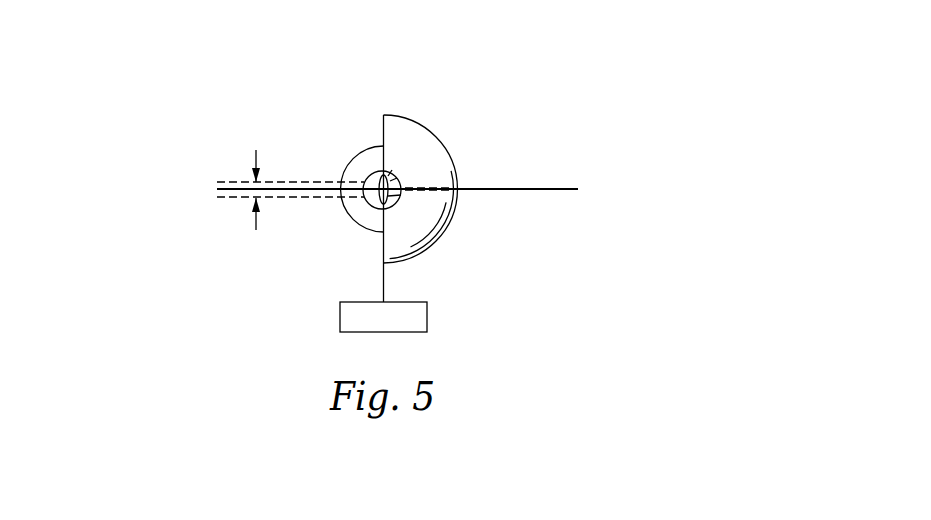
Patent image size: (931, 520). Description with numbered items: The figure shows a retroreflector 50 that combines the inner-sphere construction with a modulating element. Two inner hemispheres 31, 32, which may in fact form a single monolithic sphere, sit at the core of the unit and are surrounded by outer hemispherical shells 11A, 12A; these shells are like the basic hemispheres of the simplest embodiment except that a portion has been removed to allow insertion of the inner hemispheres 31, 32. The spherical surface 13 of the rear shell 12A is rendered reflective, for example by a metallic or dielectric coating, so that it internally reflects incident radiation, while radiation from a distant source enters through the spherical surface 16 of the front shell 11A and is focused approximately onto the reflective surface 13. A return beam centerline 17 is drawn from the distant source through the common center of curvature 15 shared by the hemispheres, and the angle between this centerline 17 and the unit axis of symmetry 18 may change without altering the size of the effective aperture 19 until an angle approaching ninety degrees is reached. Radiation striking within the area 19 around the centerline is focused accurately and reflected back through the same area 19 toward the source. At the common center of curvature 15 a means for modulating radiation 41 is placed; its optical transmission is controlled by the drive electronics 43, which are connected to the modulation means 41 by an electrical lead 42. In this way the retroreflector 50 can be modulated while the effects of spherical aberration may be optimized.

The retroreflector 50 is at (245, 72).
The spherical surface 13 is at (460, 173).
The outer hemispherical shell 12A is at (410, 225).
The spherical surface 16 is at (352, 155).
The outer hemispherical shell 11A is at (370, 217).
The inner hemisphere 31 is at (375, 170).
The inner hemisphere 32 is at (392, 168).
The means for modulating radiation 41 is at (398, 178).
The common center of curvature 15 is at (402, 195).
The return beam centerline 17 is at (509, 168).
The unit axis of symmetry 18 is at (532, 200).
The effective aperture 19 is at (255, 203).
The electrical lead 42 is at (387, 288).
The drive electronics 43 is at (429, 320).